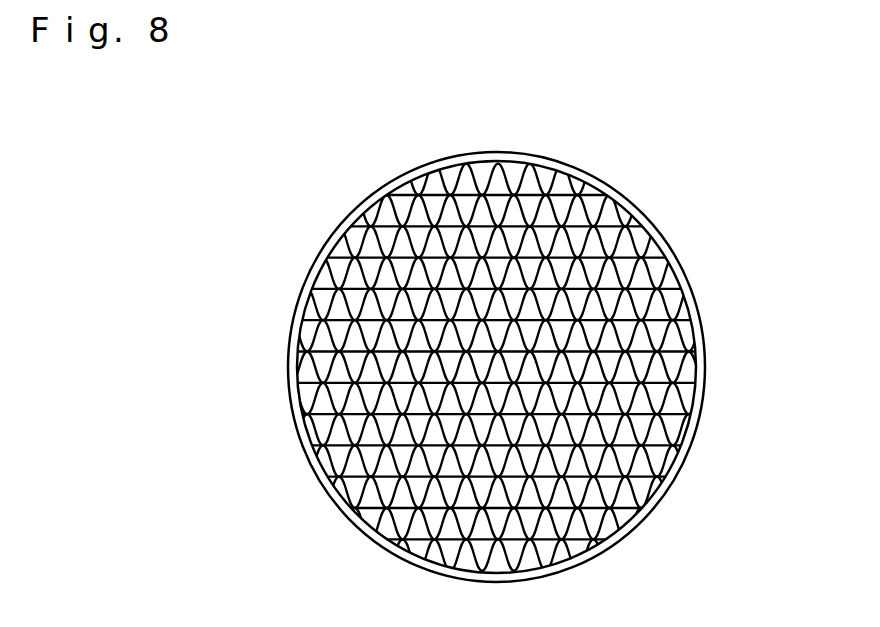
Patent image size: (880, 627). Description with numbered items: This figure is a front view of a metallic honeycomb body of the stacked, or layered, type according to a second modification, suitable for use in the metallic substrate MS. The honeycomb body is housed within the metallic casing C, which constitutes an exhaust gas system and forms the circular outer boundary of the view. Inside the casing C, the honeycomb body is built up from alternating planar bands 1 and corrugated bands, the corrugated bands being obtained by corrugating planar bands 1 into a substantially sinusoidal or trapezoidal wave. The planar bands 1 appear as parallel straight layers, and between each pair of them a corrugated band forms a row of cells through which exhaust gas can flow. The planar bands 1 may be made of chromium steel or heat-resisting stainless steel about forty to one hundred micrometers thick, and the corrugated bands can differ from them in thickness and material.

The metallic substrate MS is at (625, 171).
The planar band 1 is at (652, 390).
The metallic casing C is at (627, 528).